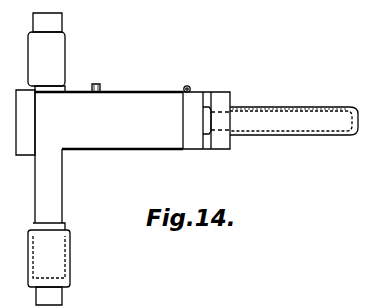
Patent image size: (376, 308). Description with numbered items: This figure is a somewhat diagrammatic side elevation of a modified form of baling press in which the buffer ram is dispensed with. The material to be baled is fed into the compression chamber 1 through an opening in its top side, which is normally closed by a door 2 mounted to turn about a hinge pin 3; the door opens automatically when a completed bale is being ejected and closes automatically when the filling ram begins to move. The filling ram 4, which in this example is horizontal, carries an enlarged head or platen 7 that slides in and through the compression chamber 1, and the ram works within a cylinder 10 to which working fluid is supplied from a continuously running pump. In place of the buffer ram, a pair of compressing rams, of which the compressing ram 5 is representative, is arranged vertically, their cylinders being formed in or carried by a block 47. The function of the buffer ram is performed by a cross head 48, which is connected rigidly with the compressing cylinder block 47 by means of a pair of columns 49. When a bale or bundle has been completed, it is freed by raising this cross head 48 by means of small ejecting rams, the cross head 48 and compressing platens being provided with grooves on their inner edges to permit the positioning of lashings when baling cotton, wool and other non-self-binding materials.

The compression chamber 1 is at (147, 150).
The door 2 is at (134, 93).
The hinge pin 3 is at (185, 81).
The filling ram 4 is at (265, 125).
The compressing ram 5 is at (62, 240).
The platen 7 is at (199, 150).
The cylinder 10 is at (317, 135).
The block 47 is at (66, 282).
The cross head 48 is at (60, 46).
The columns 49 is at (57, 196).